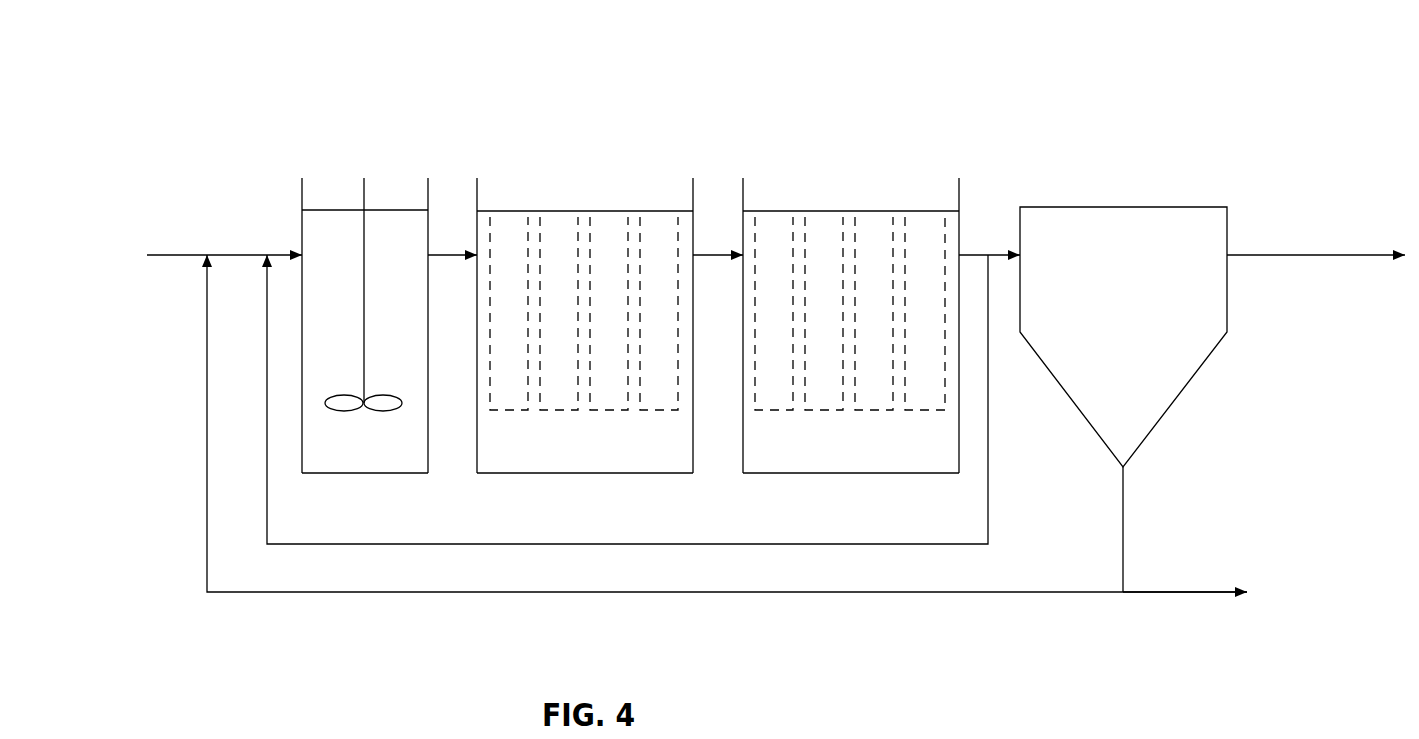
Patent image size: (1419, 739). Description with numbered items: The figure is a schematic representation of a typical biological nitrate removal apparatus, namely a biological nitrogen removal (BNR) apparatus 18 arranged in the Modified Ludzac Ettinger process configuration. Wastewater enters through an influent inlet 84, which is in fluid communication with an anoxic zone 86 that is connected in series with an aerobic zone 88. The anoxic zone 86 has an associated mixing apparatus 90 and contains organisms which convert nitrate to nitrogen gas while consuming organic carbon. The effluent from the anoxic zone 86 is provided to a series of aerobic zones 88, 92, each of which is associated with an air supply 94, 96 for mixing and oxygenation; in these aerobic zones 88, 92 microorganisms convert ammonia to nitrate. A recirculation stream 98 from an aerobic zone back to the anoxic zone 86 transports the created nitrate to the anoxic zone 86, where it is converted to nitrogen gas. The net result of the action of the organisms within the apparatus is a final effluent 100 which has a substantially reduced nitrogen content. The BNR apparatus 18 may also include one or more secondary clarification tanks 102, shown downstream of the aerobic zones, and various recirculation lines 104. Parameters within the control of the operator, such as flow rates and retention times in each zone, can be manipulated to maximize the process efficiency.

The BNR apparatus 18 is at (1085, 82).
The influent inlet 84 is at (178, 255).
The anoxic zone 86 is at (364, 473).
The aerobic zone 88 is at (583, 473).
The mixing apparatus 90 is at (345, 394).
The aerobic zone 92 is at (851, 473).
The air supply 94 is at (650, 405).
The air supply 96 is at (912, 405).
The recirculation stream 98 is at (942, 544).
The final effluent 100 is at (1316, 238).
The secondary clarification tank 102 is at (1123, 399).
The recirculation line 104 is at (1002, 592).